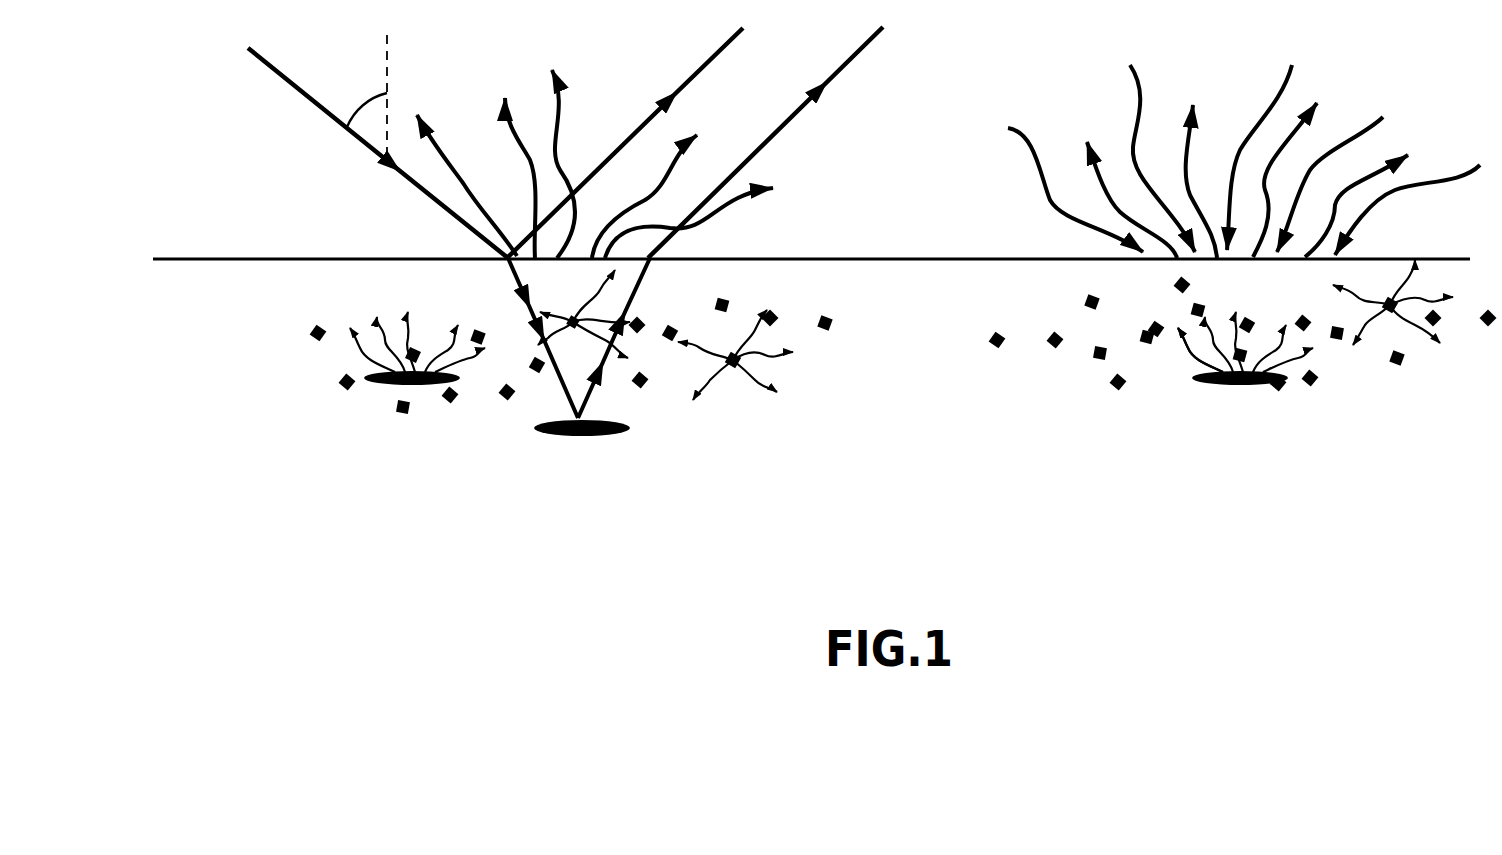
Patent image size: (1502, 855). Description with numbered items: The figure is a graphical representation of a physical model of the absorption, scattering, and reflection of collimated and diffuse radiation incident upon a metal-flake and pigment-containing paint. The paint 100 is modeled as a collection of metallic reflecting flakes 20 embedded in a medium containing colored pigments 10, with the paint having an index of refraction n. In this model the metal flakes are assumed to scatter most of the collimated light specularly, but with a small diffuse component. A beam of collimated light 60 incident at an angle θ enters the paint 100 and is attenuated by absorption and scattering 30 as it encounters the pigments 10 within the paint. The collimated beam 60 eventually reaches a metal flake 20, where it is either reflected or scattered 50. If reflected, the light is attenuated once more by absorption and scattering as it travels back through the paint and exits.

The colored pigments 10 is at (836, 323).
The metallic reflecting flakes 20 is at (427, 383).
The absorption and scattering 30 is at (770, 392).
The scattering 50 is at (1195, 360).
The beam of collimated light 60 is at (247, 50).
The metallic-flake containing paint 100 is at (283, 472).